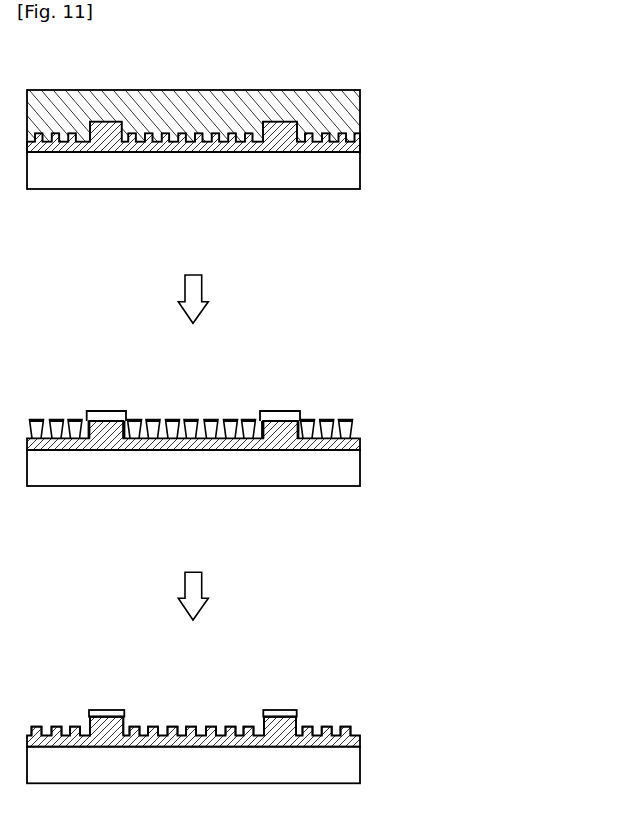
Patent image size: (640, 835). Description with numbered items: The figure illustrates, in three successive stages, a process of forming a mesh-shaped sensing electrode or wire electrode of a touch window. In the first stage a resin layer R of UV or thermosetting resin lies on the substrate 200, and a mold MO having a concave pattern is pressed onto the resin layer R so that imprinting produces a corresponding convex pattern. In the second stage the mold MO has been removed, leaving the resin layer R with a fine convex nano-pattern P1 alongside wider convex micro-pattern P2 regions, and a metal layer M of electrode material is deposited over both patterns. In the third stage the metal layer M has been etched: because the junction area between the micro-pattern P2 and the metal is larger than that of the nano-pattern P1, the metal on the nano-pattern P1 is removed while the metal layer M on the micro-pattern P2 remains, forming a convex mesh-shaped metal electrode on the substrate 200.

The mold MO is at (190, 106).
The substrate 200 is at (160, 178).
The resin layer R is at (277, 150).
The metal layer M is at (105, 416).
The nano-pattern P1 is at (212, 425).
The micro-pattern P2 is at (282, 420).